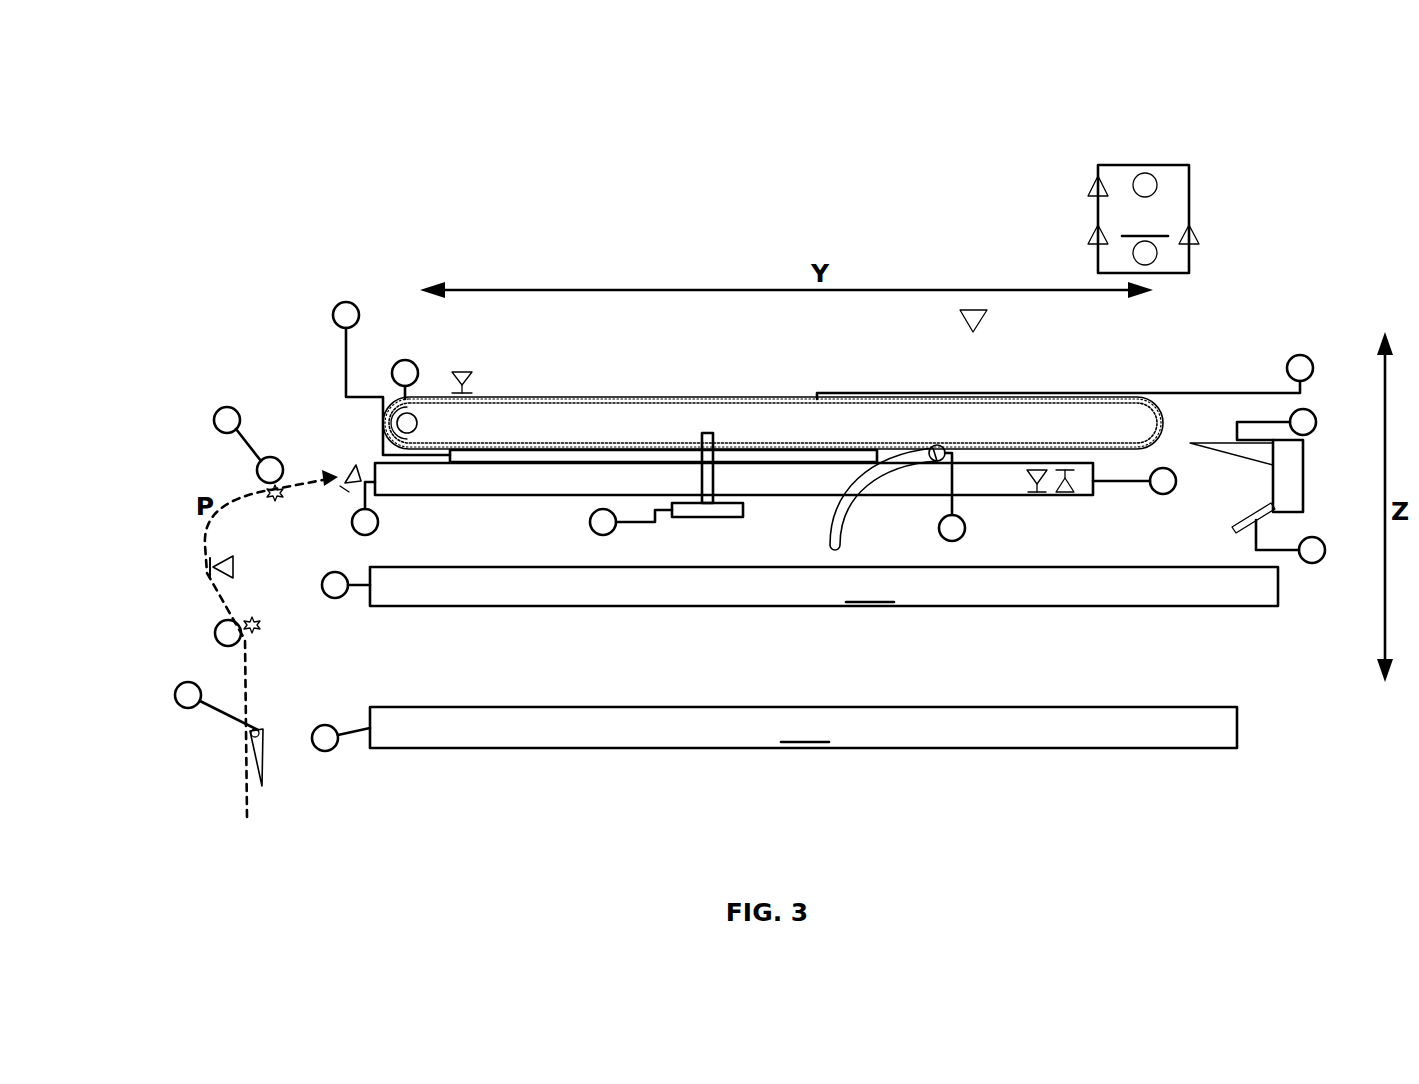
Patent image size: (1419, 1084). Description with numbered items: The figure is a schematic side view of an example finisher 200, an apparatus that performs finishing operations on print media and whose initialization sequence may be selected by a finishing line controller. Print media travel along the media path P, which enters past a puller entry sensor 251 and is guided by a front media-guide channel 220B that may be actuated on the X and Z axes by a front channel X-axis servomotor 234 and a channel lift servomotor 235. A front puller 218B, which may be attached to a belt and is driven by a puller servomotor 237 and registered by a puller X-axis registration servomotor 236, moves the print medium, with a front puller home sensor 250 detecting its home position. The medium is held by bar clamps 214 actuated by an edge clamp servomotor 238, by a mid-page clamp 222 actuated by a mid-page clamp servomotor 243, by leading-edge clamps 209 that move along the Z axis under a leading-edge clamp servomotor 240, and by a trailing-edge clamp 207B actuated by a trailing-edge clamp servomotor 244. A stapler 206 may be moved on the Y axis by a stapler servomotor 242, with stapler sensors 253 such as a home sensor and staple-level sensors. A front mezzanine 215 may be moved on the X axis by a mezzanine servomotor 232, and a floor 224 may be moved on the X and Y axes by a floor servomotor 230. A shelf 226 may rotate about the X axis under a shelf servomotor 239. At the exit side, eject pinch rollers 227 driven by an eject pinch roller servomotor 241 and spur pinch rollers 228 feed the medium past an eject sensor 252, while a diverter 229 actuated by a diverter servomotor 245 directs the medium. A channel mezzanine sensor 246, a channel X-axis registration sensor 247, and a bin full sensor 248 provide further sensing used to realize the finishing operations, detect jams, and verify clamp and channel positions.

The finisher 200 is at (605, 180).
The stapler 206 is at (1143, 219).
The trailing-edge clamp 207B is at (848, 555).
The leading-edge clamps 209 is at (1223, 453).
The bar clamps 214 is at (490, 465).
The front mezzanine 215 is at (824, 586).
The front puller 218B is at (607, 398).
The front media-guide channel 220B is at (745, 478).
The mid-page clamp 222 is at (690, 518).
The floor 224 is at (803, 727).
The shelf 226 is at (1243, 530).
The eject pinch rollers 227 is at (268, 458).
The spur pinch rollers 228 is at (218, 628).
The diverter 229 is at (283, 737).
The floor servomotor 230 is at (330, 752).
The mezzanine servomotor 232 is at (340, 598).
The front channel X-axis servomotor 234 is at (1160, 494).
The channel lift servomotor 235 is at (370, 535).
The puller X-axis registration servomotor 236 is at (1303, 355).
The puller servomotor 237 is at (402, 360).
The edge clamp servomotor 238 is at (337, 305).
The shelf servomotor 239 is at (1312, 563).
The leading-edge clamp servomotor 240 is at (1310, 410).
The eject pinch roller servomotor 241 is at (222, 408).
The stapler servomotor 242 is at (1148, 175).
The mid-page clamp servomotor 243 is at (600, 535).
The trailing-edge clamp servomotor 244 is at (945, 540).
The diverter servomotor 245 is at (190, 708).
The channel mezzanine sensor 246 is at (1065, 497).
The channel X-axis registration sensor 247 is at (1037, 497).
The bin full sensor 248 is at (987, 325).
The front puller home sensor 250 is at (465, 372).
The puller entry sensor 251 is at (353, 465).
The eject sensor 252 is at (203, 560).
The stapler sensors 253 is at (1092, 185).